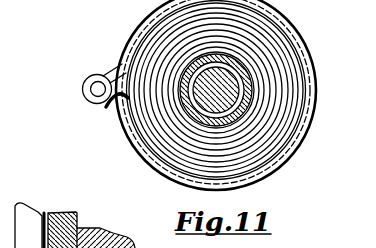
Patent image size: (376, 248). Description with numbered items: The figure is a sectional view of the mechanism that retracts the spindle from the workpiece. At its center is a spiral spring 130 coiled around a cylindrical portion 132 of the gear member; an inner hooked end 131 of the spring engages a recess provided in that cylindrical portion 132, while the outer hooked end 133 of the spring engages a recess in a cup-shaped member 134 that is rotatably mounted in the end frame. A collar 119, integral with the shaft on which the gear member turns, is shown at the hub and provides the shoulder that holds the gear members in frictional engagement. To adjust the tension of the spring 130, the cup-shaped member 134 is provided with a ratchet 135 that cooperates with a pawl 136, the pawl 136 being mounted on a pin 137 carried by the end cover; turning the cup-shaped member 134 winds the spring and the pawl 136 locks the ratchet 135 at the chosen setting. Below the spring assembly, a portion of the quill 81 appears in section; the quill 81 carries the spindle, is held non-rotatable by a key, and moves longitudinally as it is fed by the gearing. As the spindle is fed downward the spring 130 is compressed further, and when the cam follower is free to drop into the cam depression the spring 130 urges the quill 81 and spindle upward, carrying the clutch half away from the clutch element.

The quill 81 is at (63, 222).
The collar 119 is at (224, 96).
The spiral spring 130 is at (285, 114).
The hooked end 131 is at (182, 90).
The cylindrical portion 132 is at (193, 110).
The hooked end 133 is at (111, 103).
The cup-shaped member 134 is at (185, 172).
The ratchet 135 is at (142, 34).
The pawl 136 is at (118, 68).
The pin 137 is at (92, 88).